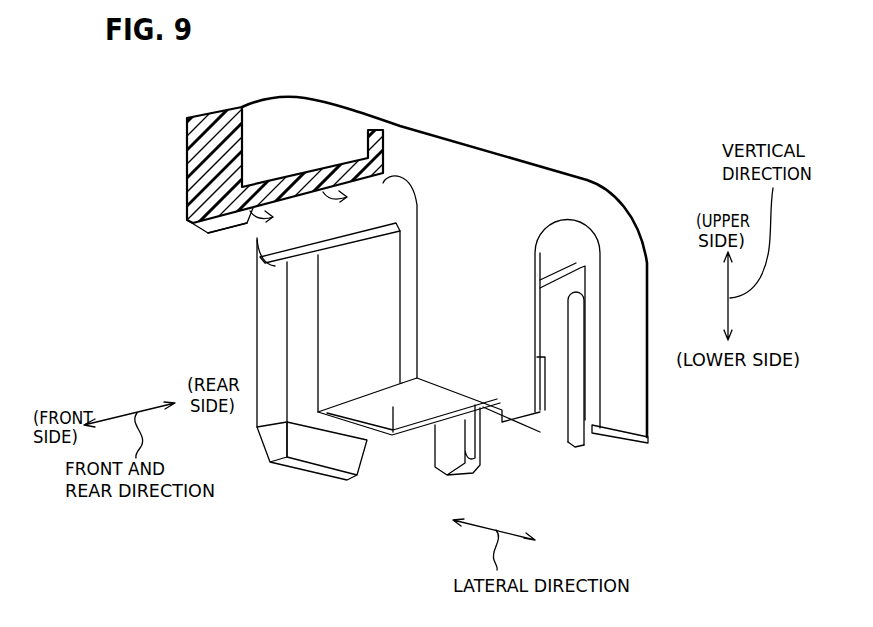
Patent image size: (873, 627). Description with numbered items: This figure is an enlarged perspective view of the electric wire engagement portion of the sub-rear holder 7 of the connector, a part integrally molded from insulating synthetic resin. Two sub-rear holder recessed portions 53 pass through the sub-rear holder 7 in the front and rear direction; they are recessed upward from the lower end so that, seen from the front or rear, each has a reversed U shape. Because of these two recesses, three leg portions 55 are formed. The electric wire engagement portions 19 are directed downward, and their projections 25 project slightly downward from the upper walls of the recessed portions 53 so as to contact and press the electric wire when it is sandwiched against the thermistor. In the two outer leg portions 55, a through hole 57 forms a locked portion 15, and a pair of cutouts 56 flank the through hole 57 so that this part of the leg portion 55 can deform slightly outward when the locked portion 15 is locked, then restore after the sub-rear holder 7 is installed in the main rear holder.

The sub-rear holder 7 is at (500, 170).
The locked portion 15 is at (548, 428).
The electric wire engagement portion 19 is at (396, 192).
The projection 25 is at (250, 231).
The sub-rear holder recessed portion 53 is at (364, 196).
The leg portion 55 is at (630, 402).
The cutout 56 is at (440, 463).
The through hole 57 is at (543, 383).